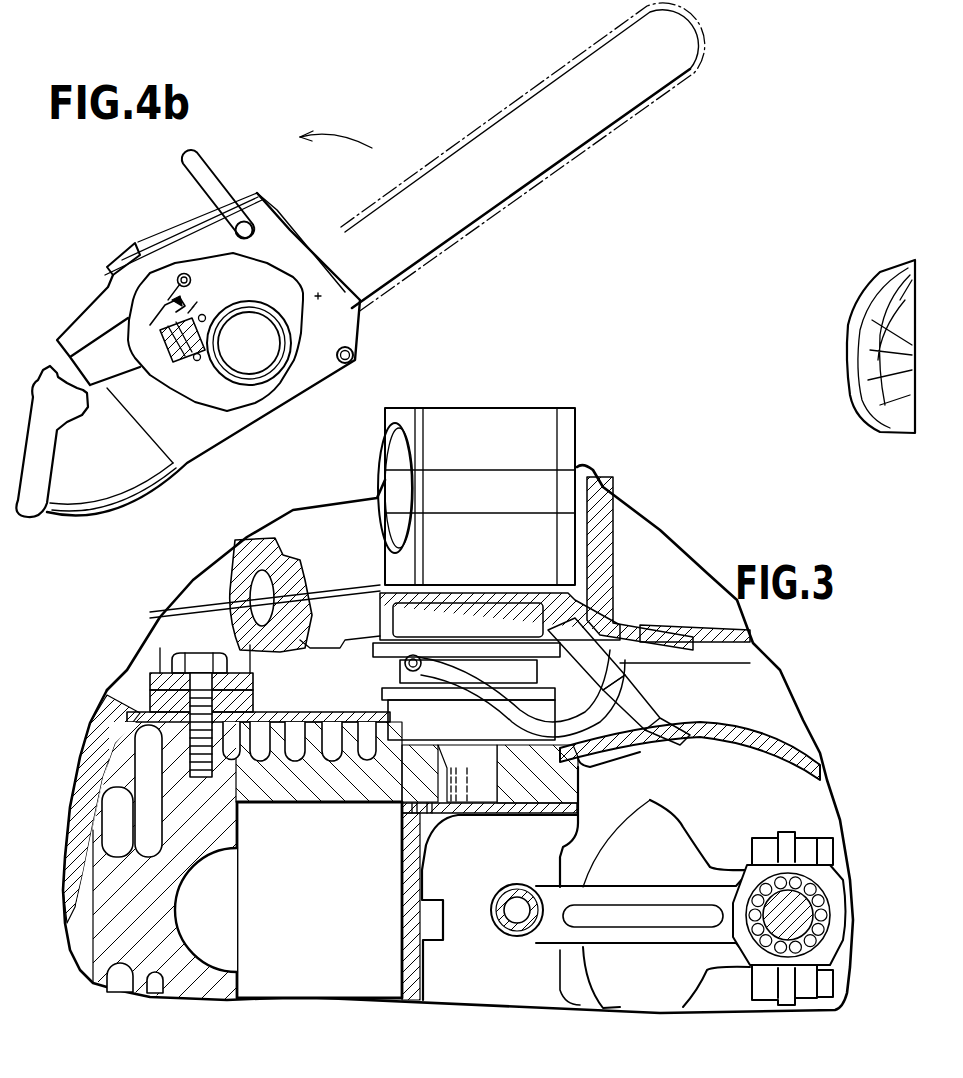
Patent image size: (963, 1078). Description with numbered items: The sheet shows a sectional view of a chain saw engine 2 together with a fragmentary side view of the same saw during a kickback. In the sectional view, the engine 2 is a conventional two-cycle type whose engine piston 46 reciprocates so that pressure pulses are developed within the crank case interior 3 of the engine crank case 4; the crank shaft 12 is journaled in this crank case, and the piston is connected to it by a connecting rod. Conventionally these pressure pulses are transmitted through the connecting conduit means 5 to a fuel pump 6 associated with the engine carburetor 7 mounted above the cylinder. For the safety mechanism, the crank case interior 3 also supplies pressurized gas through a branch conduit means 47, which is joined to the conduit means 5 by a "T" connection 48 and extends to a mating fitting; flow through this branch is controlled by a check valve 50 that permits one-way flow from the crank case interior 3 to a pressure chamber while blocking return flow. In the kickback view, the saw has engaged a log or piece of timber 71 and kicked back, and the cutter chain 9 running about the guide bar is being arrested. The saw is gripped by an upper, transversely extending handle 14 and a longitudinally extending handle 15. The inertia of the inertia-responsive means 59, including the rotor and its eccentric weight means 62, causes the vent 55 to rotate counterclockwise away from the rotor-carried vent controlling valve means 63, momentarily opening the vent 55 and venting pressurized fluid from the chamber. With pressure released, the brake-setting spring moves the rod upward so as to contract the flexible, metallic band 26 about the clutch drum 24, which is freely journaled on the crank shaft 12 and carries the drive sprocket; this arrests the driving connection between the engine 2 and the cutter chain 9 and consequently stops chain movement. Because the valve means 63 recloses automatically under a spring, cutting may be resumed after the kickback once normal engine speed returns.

In FIG. 4B, the cutter chain 9 is at (506, 108).
In FIG. 4B, the upper, transversely extending handle 14 is at (204, 174).
In FIG. 4B, the longitudinally extending handle 15 is at (83, 503).
In FIG. 4B, the clutch drum 24 is at (213, 360).
In FIG. 4B, the flexible, metallic band 26 is at (207, 318).
In FIG. 4B, the check valve 50 is at (140, 325).
In FIG. 4B, the vent 55 is at (197, 305).
In FIG. 4B, the inertia-responsive means 59 is at (183, 273).
In FIG. 4B, the eccentric weight means 62 is at (160, 256).
In FIG. 4B, the vent controlling valve means 63 is at (138, 297).
In FIG. 4B, the log or piece of timber 71 is at (870, 398).
In FIG. 3, the chain saw engine 2 is at (345, 738).
In FIG. 3, the crank case interior 3 is at (728, 790).
In FIG. 3, the engine crank case 4 is at (735, 721).
In FIG. 3, the connecting conduit means 5 is at (652, 695).
In FIG. 3, the fuel pump 6 is at (455, 605).
In FIG. 3, the engine carburetor 7 is at (568, 438).
In FIG. 3, the crank shaft 12 is at (796, 912).
In FIG. 3, the engine piston 46 is at (425, 835).
In FIG. 3, the branch conduit means 47 is at (590, 760).
In FIG. 3, the "T" connection 48 is at (628, 626).